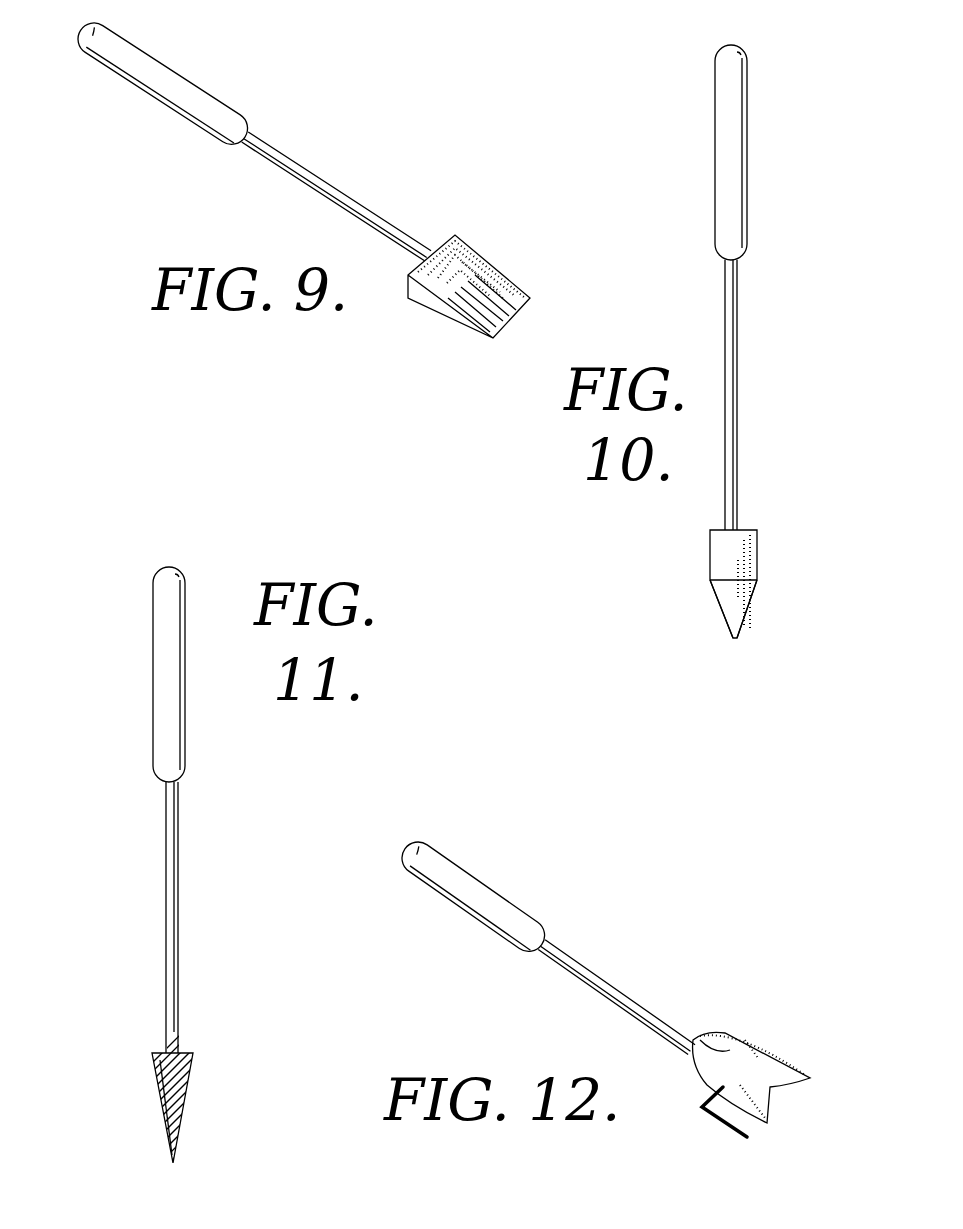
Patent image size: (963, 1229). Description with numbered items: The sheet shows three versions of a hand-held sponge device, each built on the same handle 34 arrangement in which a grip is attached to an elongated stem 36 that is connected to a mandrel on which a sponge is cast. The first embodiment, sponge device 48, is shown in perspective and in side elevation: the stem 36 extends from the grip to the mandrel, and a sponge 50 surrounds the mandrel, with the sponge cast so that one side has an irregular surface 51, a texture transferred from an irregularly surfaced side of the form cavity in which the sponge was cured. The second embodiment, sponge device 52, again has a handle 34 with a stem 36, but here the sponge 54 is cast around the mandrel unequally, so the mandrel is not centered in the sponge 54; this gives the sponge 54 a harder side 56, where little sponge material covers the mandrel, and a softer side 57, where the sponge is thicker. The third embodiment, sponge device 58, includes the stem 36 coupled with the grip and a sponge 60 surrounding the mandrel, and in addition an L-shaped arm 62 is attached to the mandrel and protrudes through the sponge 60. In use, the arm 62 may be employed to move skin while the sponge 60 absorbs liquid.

In FIG. 9, the handle 34 is at (188, 105).
In FIG. 10, the handle 34 is at (723, 170).
In FIG. 11, the handle 34 is at (165, 745).
In FIG. 12, the handle 34 is at (518, 920).
In FIG. 9, the stem 36 is at (353, 208).
In FIG. 10, the stem 36 is at (740, 382).
In FIG. 11, the stem 36 is at (178, 903).
In FIG. 12, the stem 36 is at (620, 986).
In FIG. 9, the sponge device 48 is at (348, 100).
In FIG. 10, the sponge device 48 is at (789, 110).
In FIG. 9, the sponge 50 is at (478, 242).
In FIG. 10, the sponge 50 is at (710, 552).
In FIG. 9, the irregular surface 51 is at (510, 275).
In FIG. 10, the irregular surface 51 is at (720, 610).
In FIG. 11, the sponge device 52 is at (115, 678).
In FIG. 11, the sponge 54 is at (190, 1125).
In FIG. 11, the harder side 56 is at (158, 1080).
In FIG. 11, the softer side 57 is at (187, 1088).
In FIG. 12, the sponge device 58 is at (490, 823).
In FIG. 12, the sponge 60 is at (760, 1052).
In FIG. 12, the L-shaped arm 62 is at (723, 1130).